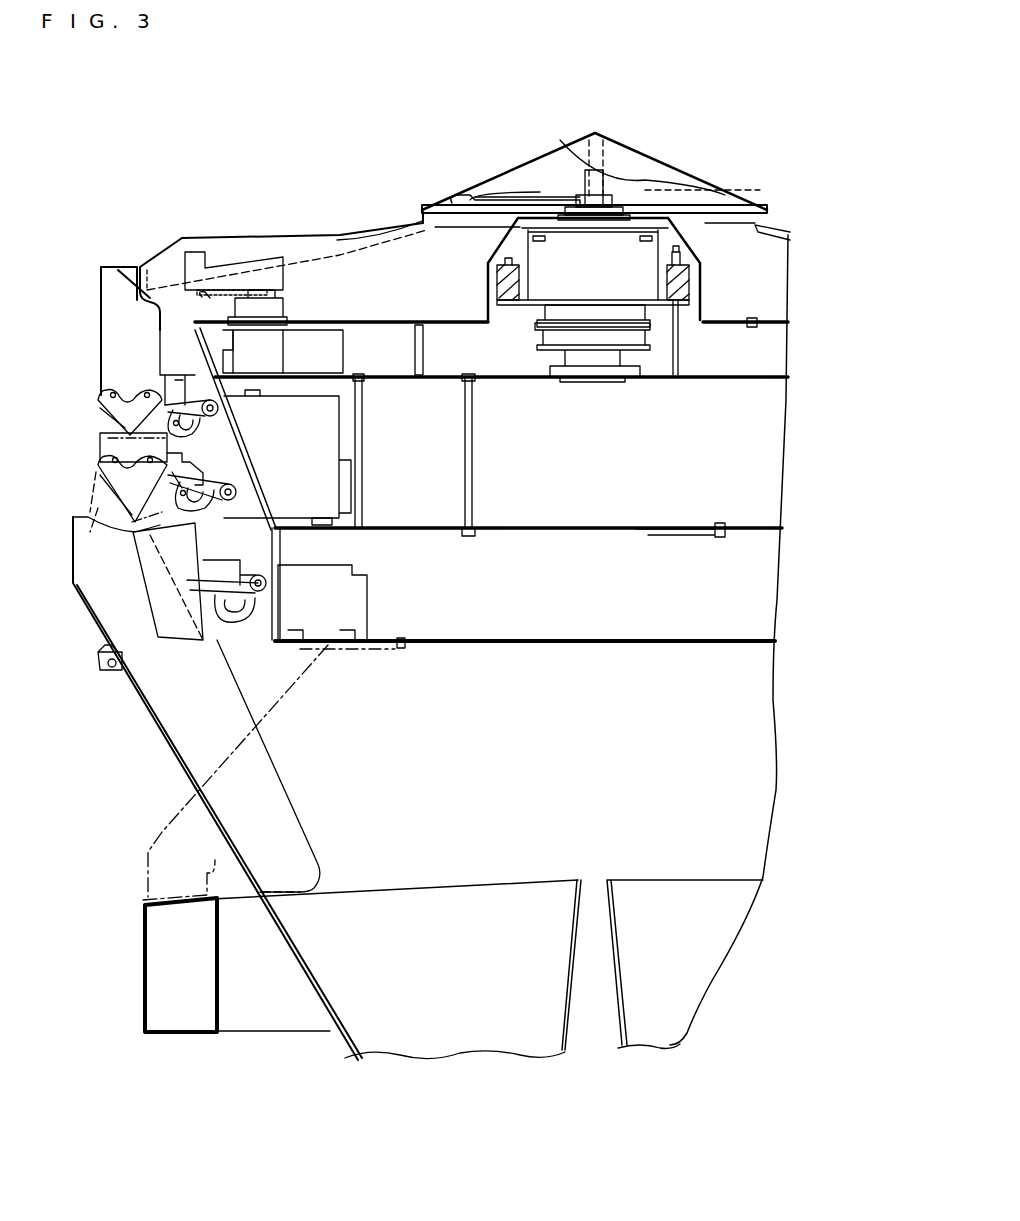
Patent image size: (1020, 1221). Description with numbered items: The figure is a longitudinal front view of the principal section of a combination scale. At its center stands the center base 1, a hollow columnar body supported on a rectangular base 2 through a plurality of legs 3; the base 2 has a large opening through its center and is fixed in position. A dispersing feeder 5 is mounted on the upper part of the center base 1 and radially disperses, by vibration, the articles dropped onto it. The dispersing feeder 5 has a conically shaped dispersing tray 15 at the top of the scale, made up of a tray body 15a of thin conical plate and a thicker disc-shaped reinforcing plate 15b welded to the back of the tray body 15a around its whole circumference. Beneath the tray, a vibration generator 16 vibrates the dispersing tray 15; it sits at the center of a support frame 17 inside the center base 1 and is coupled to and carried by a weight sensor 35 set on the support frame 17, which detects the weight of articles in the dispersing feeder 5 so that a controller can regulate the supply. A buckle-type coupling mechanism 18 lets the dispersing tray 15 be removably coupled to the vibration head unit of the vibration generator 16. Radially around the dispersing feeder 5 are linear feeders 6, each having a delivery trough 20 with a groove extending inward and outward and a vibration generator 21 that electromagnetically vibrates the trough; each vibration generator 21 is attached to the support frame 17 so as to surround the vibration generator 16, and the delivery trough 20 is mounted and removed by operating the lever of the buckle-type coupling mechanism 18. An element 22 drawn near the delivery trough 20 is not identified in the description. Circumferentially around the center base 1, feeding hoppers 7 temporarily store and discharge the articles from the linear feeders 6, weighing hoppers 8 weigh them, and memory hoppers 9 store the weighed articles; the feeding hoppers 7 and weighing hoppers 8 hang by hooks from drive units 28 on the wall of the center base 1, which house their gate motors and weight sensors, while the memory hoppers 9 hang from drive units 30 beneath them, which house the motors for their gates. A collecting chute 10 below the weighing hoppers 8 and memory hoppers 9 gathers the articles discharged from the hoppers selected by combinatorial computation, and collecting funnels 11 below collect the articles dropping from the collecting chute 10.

The center base 1 is at (545, 647).
The base 2 is at (145, 948).
The legs 3 is at (166, 828).
The dispersing feeder 5 is at (638, 147).
The linear feeders 6 is at (293, 232).
The feeding hoppers 7 is at (100, 321).
The weighing hoppers 8 is at (96, 450).
The memory hoppers 9 is at (148, 578).
The collecting chute 10 is at (160, 718).
The collecting funnels 11 is at (325, 1005).
The dispersing tray 15 is at (683, 180).
The tray body 15a is at (508, 182).
The reinforcing plate 15b is at (534, 197).
The vibration generator 16 is at (640, 278).
The support frame 17 is at (497, 381).
The buckle-type coupling mechanism 18 is at (516, 207).
The delivery trough 20 is at (240, 238).
The vibration generator 21 is at (320, 344).
The bearing block 22 is at (226, 304).
The drive units 28 is at (340, 440).
The drive units 30 is at (368, 596).
The weight sensor 35 is at (606, 376).